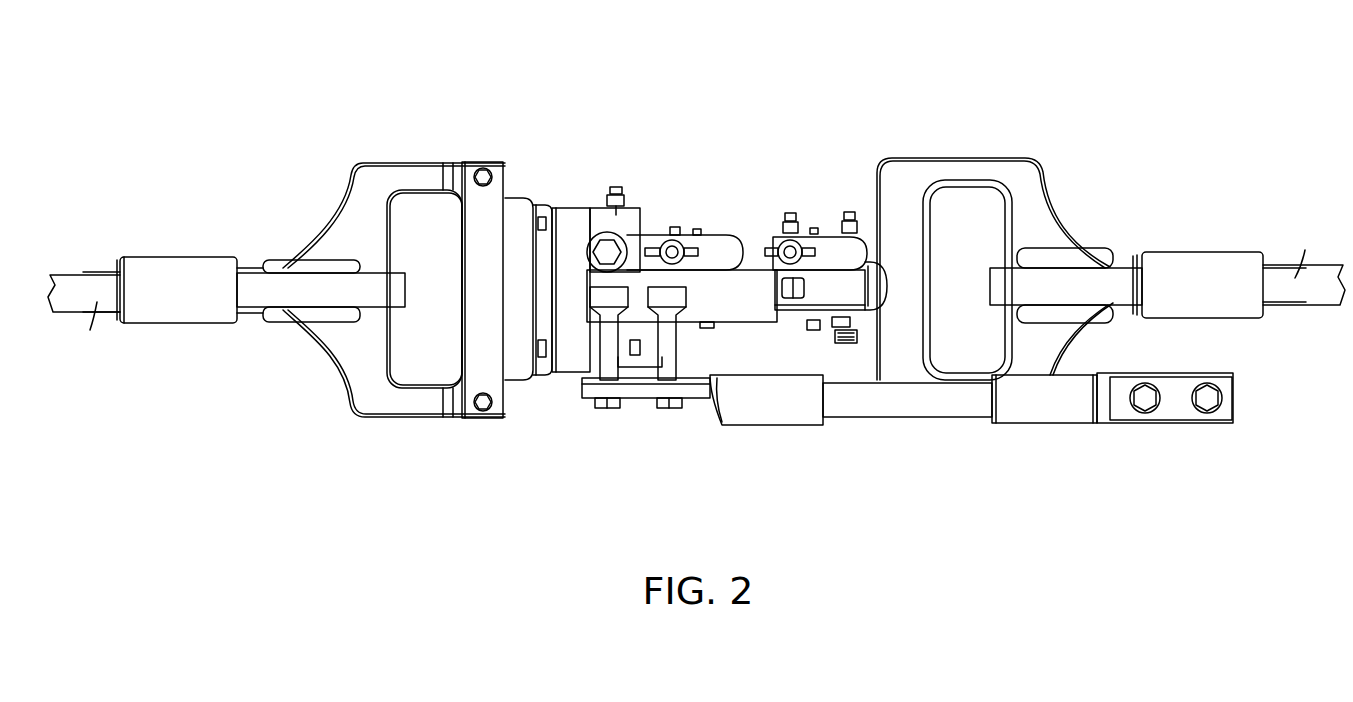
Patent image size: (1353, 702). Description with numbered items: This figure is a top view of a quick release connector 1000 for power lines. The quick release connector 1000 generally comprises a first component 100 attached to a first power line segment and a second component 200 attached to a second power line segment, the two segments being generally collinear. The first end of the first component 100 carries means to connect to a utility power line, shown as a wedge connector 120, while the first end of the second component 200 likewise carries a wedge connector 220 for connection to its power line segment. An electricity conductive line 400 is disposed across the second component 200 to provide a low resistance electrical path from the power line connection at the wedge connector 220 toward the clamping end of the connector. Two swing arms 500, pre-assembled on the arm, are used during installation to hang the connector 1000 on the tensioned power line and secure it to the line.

The quick release connector 1000 is at (1106, 88).
The first component 100 is at (557, 167).
The wedge connector 120 is at (190, 265).
The second component 200 is at (582, 470).
The wedge connector 220 is at (1200, 265).
The electricity conductive line 400 is at (906, 408).
The swing arms 500 is at (720, 240).